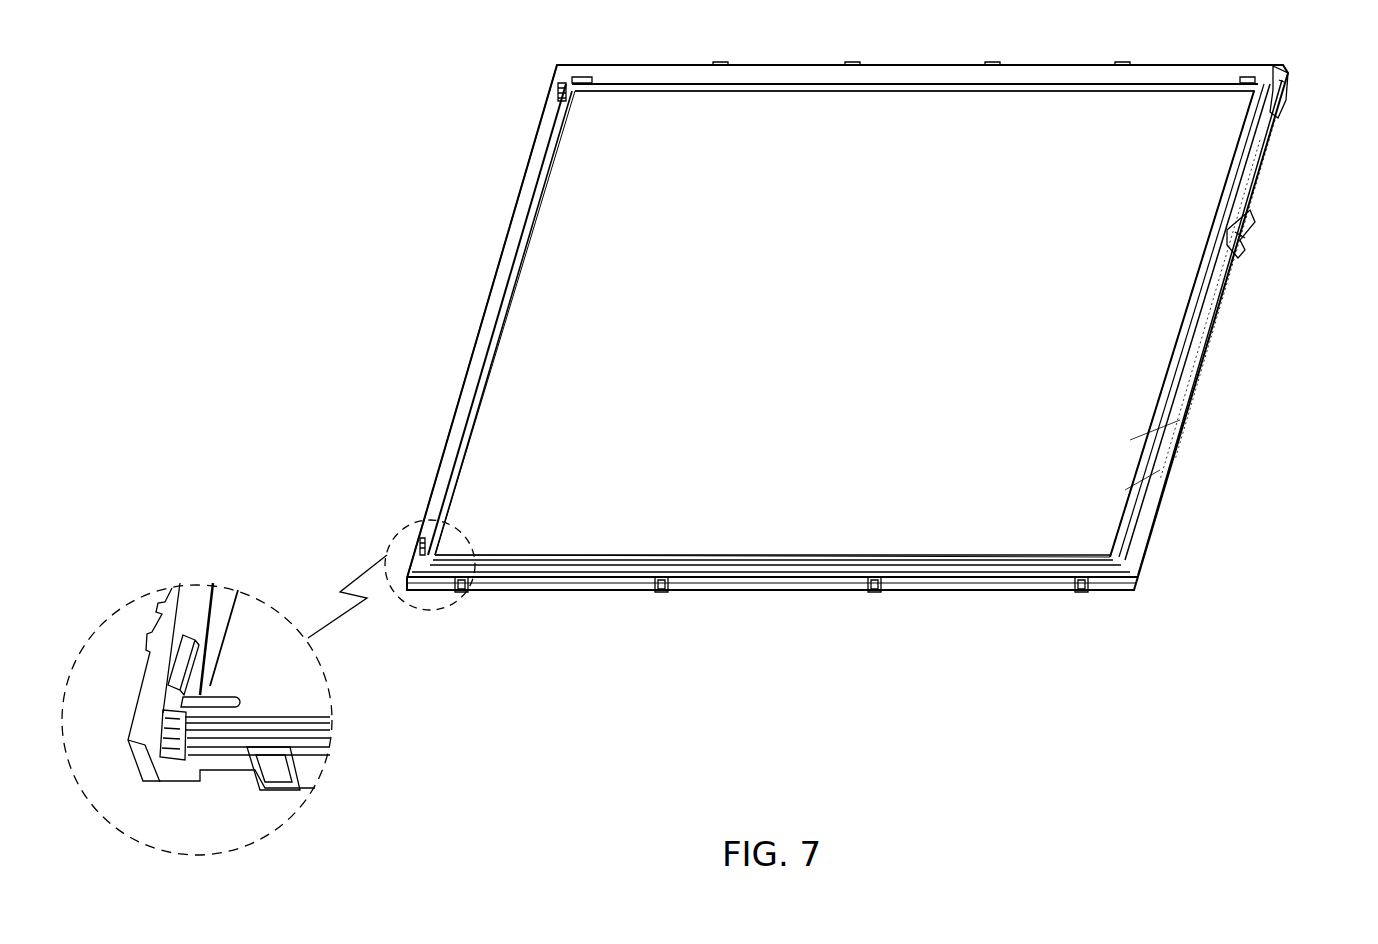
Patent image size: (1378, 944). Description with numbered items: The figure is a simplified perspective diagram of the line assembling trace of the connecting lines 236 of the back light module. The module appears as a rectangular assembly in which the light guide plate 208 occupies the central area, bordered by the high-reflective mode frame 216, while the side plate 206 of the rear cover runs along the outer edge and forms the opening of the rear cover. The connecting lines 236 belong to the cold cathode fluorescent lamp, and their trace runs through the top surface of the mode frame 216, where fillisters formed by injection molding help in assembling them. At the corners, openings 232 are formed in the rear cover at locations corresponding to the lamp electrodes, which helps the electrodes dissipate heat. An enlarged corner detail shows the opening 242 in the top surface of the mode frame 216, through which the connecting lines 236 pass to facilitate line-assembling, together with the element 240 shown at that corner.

The side plate 206 is at (604, 585).
The light guide plate 208 is at (1117, 455).
The mode frame 216 is at (497, 298).
The openings 232 is at (439, 600).
The connecting lines 236 is at (1197, 318).
The connecting bars 240 is at (232, 733).
The opening 242 is at (163, 727).